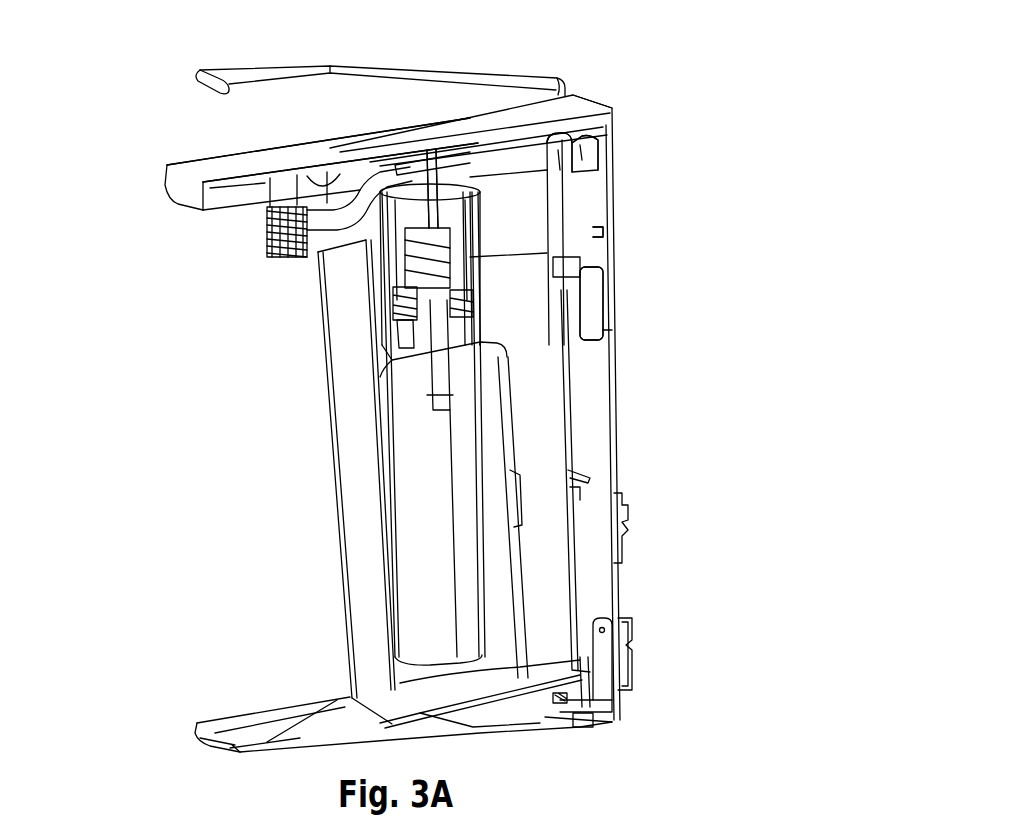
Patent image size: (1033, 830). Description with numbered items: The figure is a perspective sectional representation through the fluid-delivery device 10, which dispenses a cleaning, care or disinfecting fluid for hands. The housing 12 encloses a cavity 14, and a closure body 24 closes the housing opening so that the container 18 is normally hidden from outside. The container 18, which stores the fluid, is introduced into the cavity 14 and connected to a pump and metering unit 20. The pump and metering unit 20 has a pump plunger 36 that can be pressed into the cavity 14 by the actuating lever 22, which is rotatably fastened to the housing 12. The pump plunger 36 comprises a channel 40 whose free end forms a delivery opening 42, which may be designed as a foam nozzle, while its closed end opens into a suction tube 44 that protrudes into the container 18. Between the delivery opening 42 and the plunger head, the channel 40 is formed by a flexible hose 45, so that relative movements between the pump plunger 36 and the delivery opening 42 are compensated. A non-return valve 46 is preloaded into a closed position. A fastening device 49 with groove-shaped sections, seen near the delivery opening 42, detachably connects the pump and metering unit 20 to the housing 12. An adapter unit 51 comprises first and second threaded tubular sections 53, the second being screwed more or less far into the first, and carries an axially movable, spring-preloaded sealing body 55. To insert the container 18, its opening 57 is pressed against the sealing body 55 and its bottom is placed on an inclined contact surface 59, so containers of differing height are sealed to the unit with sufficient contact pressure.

The device 10 is at (662, 86).
The housing 12 is at (617, 460).
The cavity 14 is at (560, 713).
The container 18 is at (510, 448).
The pump and metering unit 20 is at (290, 276).
The actuating lever 22 is at (253, 80).
The closure body 24 is at (342, 592).
The pump plunger 36 is at (430, 170).
The channel 40 is at (357, 187).
The delivery opening 42 is at (297, 255).
The suction tube 44 is at (430, 400).
The flexible hose 45 is at (322, 150).
The non-return valve 46 is at (413, 323).
The fastening device 49 is at (250, 226).
The adapter unit 51 is at (503, 234).
The tubular section 53 is at (505, 277).
The sealing body 55 is at (480, 343).
The opening 57 is at (407, 317).
The inclined contact surface 59 is at (543, 682).